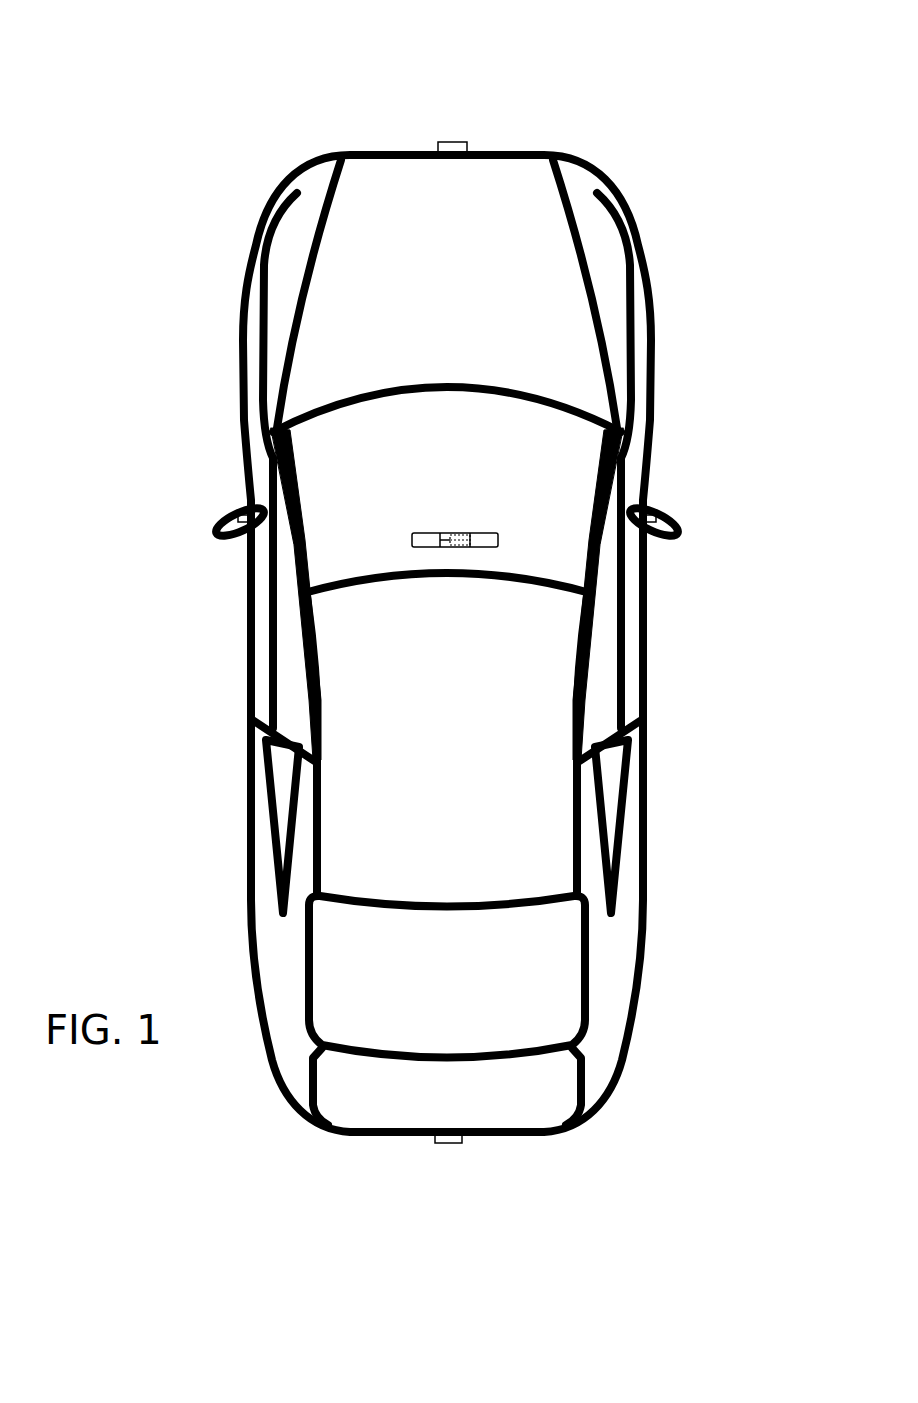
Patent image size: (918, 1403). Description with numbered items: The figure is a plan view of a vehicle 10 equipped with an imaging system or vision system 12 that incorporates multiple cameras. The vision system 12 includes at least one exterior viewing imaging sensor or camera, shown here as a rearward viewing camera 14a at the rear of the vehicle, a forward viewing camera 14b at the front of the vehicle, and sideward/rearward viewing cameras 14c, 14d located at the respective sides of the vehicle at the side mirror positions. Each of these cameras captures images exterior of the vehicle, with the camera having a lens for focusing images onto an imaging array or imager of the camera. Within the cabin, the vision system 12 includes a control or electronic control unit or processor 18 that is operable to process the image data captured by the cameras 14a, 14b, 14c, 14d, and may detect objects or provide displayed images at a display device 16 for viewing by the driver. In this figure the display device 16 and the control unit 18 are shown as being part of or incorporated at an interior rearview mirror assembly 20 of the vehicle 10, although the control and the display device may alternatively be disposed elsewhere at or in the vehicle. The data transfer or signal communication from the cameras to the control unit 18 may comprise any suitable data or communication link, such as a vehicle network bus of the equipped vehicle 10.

The vehicle 10 is at (198, 245).
The vision system 12 is at (398, 1163).
The rearward viewing camera 14a is at (452, 1140).
The forward viewing camera 14b is at (457, 142).
The sideward/rearward viewing camera 14c is at (238, 518).
The sideward/rearward viewing camera 14d is at (657, 517).
The display device 16 is at (430, 535).
The electronic control unit 18 is at (452, 533).
The interior rearview mirror assembly 20 is at (498, 535).